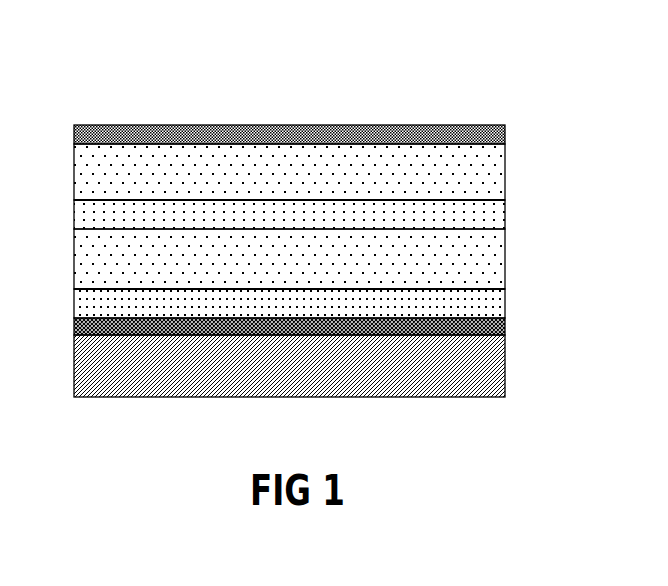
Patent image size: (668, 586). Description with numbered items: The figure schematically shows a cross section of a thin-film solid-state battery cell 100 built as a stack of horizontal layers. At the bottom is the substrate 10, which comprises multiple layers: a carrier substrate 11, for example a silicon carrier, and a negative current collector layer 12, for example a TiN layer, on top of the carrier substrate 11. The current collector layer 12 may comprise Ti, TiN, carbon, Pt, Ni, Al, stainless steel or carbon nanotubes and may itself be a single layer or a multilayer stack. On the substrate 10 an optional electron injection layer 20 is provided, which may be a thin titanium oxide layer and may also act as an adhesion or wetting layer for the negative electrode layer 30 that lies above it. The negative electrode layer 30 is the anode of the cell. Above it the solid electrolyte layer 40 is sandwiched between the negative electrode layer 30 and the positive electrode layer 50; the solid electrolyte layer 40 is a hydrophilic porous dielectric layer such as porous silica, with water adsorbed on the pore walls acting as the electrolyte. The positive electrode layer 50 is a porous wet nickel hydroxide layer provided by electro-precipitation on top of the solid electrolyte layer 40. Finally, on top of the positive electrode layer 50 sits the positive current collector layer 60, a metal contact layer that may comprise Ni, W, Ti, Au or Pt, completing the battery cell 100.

The thin-film solid-state battery cell 100 is at (146, 85).
The positive current collector layer 60 is at (505, 135).
The positive electrode layer 50 is at (505, 168).
The solid electrolyte layer 40 is at (505, 215).
The negative electrode layer 30 is at (505, 253).
The electron injection layer 20 is at (505, 302).
The substrate 10 is at (357, 373).
The negative current collector layer 12 is at (505, 328).
The carrier substrate 11 is at (505, 377).